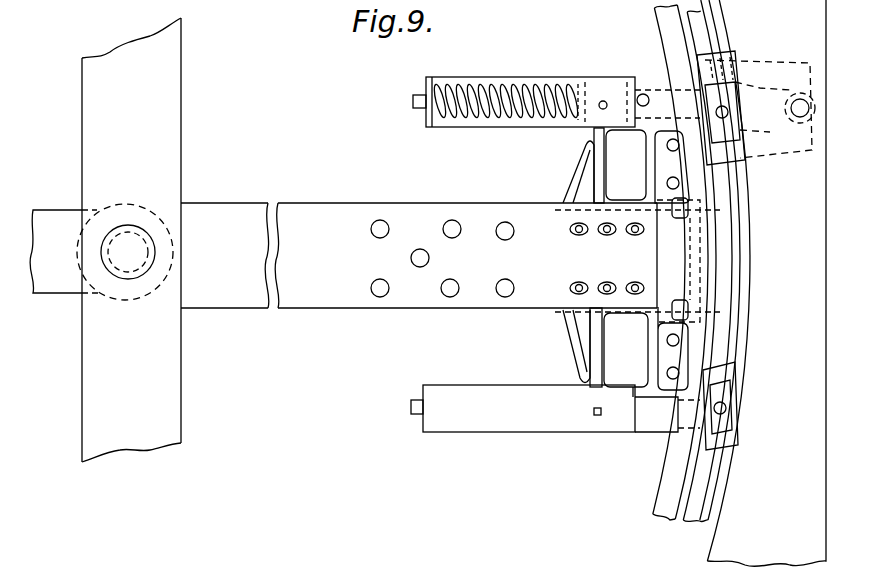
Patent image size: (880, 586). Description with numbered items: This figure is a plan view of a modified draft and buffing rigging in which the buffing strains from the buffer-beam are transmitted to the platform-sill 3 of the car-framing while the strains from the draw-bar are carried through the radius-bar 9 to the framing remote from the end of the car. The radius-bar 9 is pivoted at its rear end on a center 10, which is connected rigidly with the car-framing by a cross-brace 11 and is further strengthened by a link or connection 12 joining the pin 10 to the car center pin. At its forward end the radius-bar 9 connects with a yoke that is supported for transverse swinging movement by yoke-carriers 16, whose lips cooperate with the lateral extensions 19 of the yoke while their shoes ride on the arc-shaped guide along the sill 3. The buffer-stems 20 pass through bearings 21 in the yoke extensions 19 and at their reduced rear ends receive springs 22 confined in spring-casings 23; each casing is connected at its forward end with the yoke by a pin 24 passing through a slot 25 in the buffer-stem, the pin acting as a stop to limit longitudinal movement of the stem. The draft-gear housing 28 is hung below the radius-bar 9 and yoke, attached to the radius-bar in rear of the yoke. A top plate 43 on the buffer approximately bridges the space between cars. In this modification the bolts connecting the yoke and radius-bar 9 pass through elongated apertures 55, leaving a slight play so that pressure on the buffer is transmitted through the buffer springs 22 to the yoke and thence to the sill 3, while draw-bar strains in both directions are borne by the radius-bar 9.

The platform-sill 3 is at (635, 262).
The radius-bar 9 is at (419, 255).
The center pin of the radius-bar 10 is at (148, 238).
The cross-brace 11 is at (131, 240).
The link or connection 12 is at (65, 251).
The yoke-carrier 16 is at (735, 395).
The lateral extension of the yoke 19 is at (717, 52).
The buffer-stem 20 is at (411, 407).
The bearing 21 is at (606, 88).
The spring 22 is at (503, 88).
The spring-casing 23 is at (497, 433).
The pin 24 is at (596, 418).
The slot 25 is at (650, 432).
The draft-gear housing 28 is at (637, 260).
The top plate 43 is at (754, 283).
The elongated aperture 55 is at (638, 236).